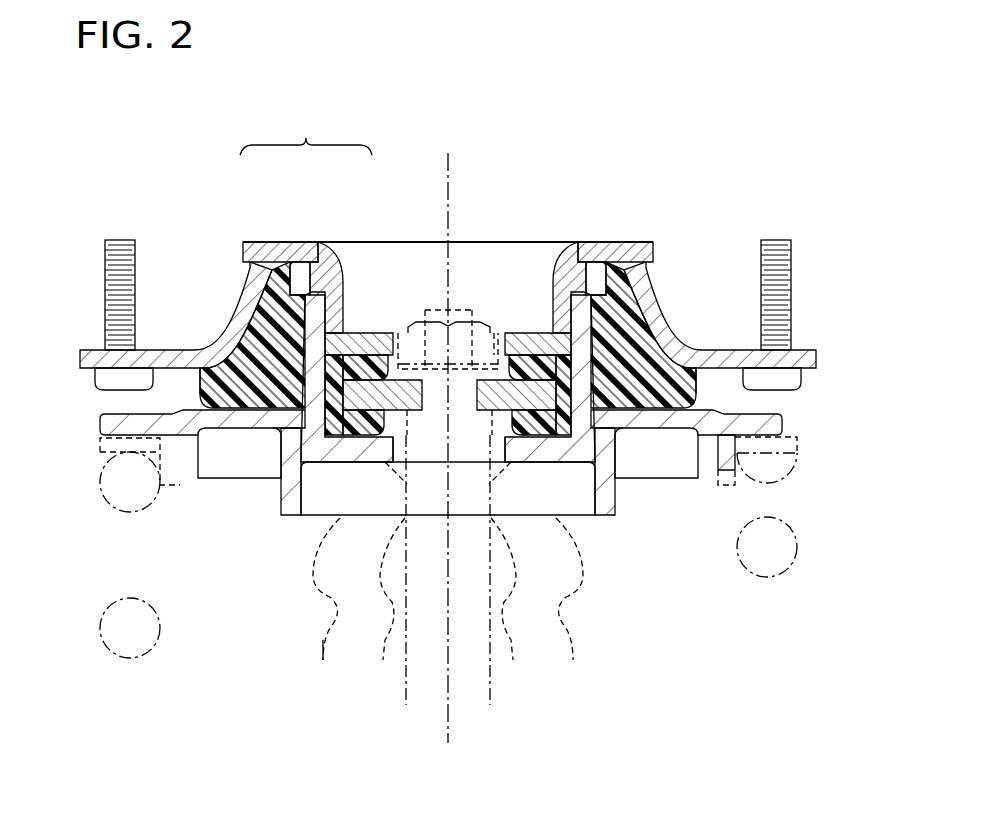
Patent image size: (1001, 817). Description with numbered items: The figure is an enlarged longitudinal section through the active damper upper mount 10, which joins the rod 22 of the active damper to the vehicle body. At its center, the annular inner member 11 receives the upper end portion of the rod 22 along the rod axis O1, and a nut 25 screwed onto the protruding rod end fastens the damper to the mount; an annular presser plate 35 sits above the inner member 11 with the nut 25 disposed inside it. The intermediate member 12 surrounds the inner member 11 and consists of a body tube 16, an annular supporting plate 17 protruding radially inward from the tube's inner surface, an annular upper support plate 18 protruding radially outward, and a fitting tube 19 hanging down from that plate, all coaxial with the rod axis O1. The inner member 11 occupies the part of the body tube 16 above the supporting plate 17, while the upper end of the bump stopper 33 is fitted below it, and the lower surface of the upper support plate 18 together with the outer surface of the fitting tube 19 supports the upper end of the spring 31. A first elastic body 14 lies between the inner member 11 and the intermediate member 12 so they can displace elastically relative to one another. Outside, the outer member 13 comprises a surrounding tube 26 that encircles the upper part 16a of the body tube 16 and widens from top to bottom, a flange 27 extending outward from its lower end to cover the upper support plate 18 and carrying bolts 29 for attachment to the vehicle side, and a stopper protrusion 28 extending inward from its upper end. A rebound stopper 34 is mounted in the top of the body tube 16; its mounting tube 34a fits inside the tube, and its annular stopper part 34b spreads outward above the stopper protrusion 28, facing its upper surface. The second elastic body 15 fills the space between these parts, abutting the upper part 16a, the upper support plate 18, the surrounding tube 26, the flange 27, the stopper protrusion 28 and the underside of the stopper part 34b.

The active damper upper mount 10 is at (705, 165).
The inner member 11 is at (480, 412).
The intermediate member 12 is at (790, 425).
The outer member 13 is at (822, 345).
The first elastic body 14 is at (343, 427).
The second elastic body 15 is at (237, 408).
The body tube 16 is at (625, 462).
The upper part of the body tube 16a is at (292, 348).
The supporting plate 17 is at (553, 462).
The upper support plate 18 is at (700, 450).
The fitting tube 19 is at (722, 468).
The rod 22 is at (490, 680).
The nut 25 is at (481, 323).
The surrounding tube 26 is at (667, 327).
The flange 27 is at (726, 350).
The stopper protrusion 28 is at (620, 292).
The bolts 29 is at (108, 282).
The spring 31 is at (797, 547).
The bump stopper 33 is at (323, 640).
The rebound stopper 34 is at (306, 127).
The mounting tube 34a is at (344, 262).
The stopper part 34b is at (272, 242).
The presser plate 35 is at (530, 333).
The rod axis O1 is at (447, 190).